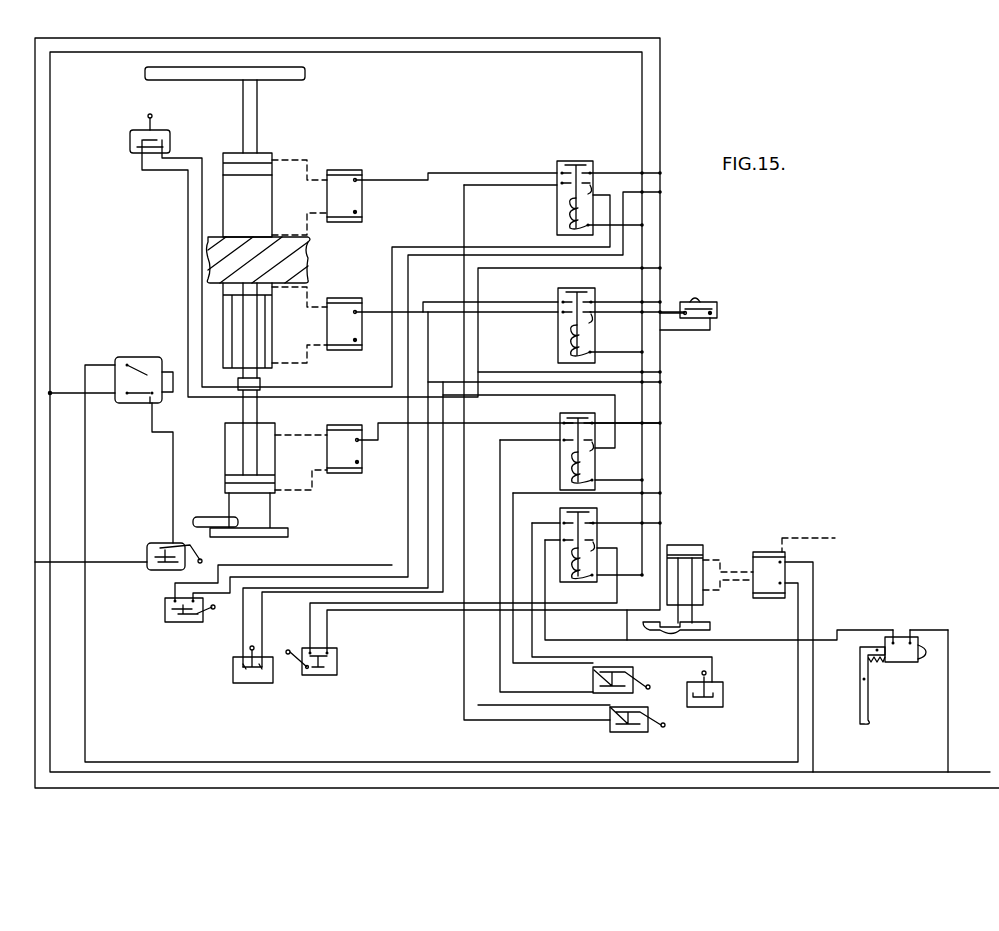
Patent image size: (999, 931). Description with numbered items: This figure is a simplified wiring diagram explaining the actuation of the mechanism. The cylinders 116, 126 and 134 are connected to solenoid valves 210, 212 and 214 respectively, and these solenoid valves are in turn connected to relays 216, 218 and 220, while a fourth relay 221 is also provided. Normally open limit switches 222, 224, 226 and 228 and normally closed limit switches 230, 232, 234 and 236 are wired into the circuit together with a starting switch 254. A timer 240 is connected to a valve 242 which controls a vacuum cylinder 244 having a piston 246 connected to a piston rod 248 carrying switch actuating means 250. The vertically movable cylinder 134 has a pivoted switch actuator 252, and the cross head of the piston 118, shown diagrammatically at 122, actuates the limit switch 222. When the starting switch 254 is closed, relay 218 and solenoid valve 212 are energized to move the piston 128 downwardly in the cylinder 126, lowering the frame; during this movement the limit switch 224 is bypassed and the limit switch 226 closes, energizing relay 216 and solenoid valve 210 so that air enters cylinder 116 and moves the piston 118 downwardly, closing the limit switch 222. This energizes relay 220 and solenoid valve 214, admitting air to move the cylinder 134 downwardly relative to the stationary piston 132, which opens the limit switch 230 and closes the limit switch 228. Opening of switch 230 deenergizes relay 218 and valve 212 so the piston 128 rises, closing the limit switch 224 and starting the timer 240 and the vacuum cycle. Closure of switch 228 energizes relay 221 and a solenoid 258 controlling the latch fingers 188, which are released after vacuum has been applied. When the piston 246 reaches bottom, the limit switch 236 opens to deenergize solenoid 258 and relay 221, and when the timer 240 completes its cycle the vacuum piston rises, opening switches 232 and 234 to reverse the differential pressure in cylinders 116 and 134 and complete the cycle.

The cross head of the piston 122 is at (205, 80).
The normally open limit switch 222 is at (170, 129).
The piston 118 is at (270, 168).
The cylinder 116 is at (262, 222).
The solenoid valve 210 is at (362, 191).
The relay 216 is at (557, 210).
The piston 128 is at (263, 304).
The solenoid valve 212 is at (357, 321).
The cylinder 126 is at (296, 348).
The relay 218 is at (558, 337).
The starting switch 254 is at (720, 313).
The timer 240 is at (137, 404).
The piston 132 is at (230, 480).
The cylinder 134 is at (275, 456).
The solenoid valve 214 is at (362, 472).
The relay 220 is at (560, 465).
The pivoted switch actuator 252 is at (210, 516).
The normally open limit switch 224 is at (178, 543).
The fourth relay 221 is at (556, 574).
The piston 246 is at (695, 545).
The vacuum cylinder 244 is at (722, 558).
The valve 242 is at (785, 575).
The normally open limit switch 226 is at (175, 624).
The normally closed limit switch 230 is at (272, 655).
The normally open limit switch 228 is at (335, 648).
The piston rod 248 is at (692, 612).
The switch actuating means 250 is at (674, 636).
The solenoid 258 is at (920, 630).
The normally closed limit switch 232 is at (593, 678).
The normally closed limit switch 236 is at (723, 689).
The normally closed limit switch 234 is at (637, 732).
The latch fingers 188 is at (852, 697).